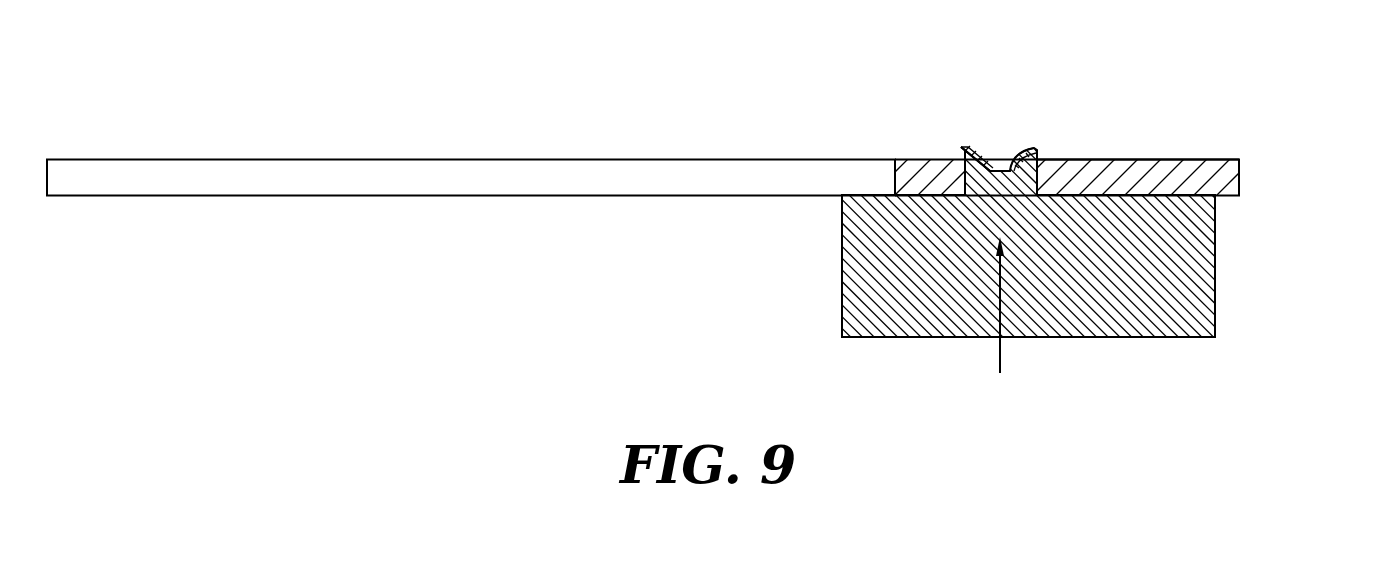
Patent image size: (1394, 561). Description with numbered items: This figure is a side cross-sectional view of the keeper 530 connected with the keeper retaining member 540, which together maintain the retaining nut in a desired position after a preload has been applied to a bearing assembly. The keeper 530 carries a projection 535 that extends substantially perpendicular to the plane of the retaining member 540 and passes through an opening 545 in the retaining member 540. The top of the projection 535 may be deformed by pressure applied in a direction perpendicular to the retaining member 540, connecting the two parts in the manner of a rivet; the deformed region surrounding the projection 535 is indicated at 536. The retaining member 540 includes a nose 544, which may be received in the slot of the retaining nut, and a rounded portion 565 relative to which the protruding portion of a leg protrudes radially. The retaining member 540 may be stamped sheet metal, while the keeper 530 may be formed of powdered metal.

The keeper 530 is at (1204, 263).
The projection 535 is at (1002, 168).
The groove walls 536 is at (963, 147).
The keeper retaining member 540 is at (1155, 160).
The nose 544 is at (1238, 173).
The opening 545 is at (1000, 327).
The rounded portion 565 is at (272, 176).